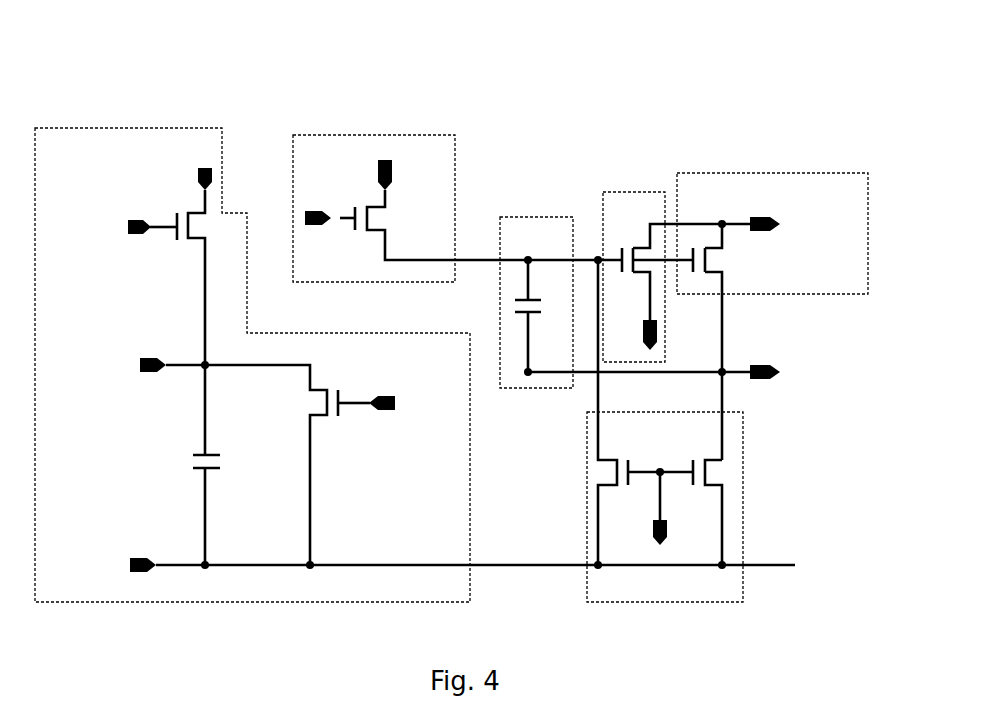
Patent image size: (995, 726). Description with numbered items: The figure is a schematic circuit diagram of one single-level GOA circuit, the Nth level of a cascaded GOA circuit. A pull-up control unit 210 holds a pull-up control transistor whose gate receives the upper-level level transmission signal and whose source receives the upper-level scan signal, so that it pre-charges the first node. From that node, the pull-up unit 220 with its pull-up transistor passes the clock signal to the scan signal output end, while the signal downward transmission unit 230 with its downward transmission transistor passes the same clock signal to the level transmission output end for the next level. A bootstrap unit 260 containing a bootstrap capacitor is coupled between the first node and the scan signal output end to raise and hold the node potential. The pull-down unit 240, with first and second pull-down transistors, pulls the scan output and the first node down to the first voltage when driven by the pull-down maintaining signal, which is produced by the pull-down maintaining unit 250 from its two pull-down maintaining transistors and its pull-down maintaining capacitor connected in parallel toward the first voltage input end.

The pull-down maintaining unit 250 is at (125, 128).
The pull-up control unit 210 is at (372, 135).
The bootstrap unit 260 is at (540, 217).
The signal downward transmission unit 230 is at (635, 192).
The pull-up unit 220 is at (776, 173).
The pull-down unit 240 is at (745, 497).